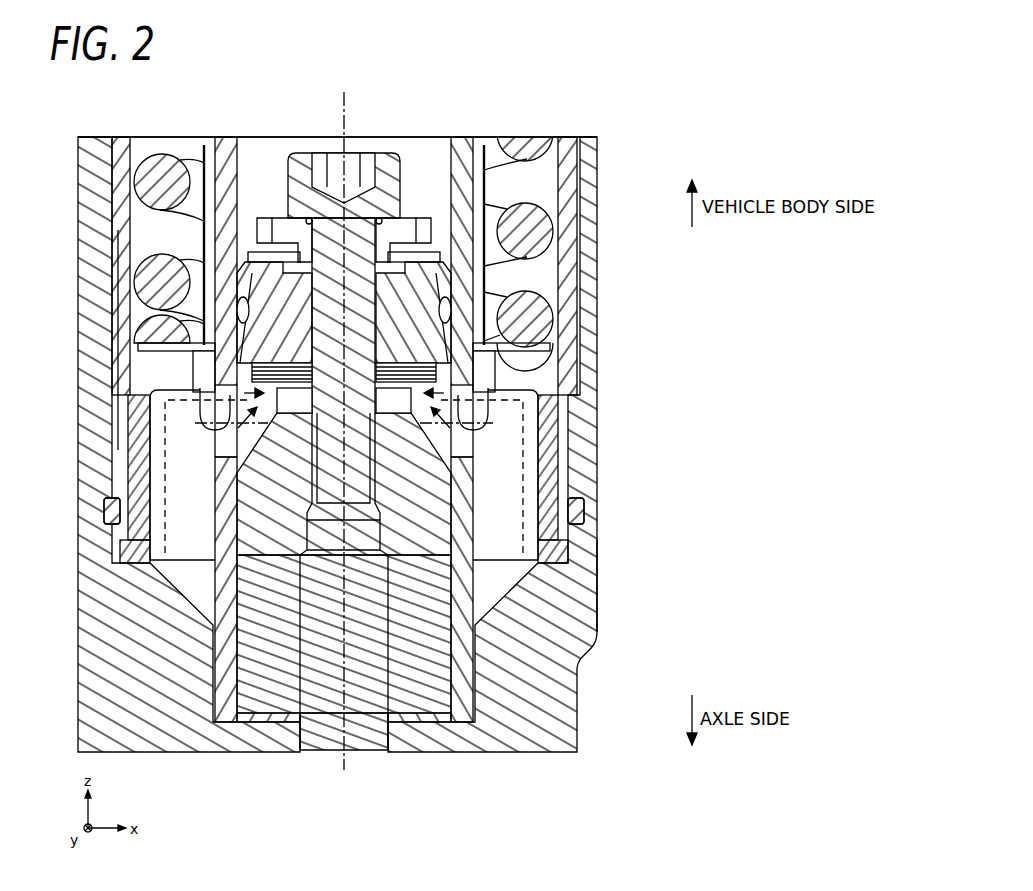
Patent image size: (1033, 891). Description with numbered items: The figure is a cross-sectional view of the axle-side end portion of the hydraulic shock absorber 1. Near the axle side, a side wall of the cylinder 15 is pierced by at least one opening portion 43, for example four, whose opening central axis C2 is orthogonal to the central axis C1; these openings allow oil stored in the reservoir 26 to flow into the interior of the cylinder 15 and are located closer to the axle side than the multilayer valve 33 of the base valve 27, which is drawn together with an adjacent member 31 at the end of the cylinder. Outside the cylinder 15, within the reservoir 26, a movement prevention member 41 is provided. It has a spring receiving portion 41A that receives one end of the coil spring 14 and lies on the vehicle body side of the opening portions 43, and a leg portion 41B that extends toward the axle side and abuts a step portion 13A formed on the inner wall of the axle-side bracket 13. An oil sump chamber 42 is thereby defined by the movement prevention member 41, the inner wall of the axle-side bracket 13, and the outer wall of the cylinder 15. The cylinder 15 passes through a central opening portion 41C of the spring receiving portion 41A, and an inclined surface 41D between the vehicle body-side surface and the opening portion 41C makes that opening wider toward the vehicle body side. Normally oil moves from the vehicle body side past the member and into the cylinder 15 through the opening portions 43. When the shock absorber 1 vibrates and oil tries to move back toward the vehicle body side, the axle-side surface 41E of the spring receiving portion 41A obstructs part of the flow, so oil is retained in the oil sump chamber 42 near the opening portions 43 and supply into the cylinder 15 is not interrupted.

The hydraulic shock absorber 1 is at (687, 108).
The axle-side bracket 13 is at (586, 603).
The step portion 13A is at (580, 577).
The coil spring 14 is at (530, 234).
The cylinder 15 is at (478, 277).
The reservoir 26 is at (530, 185).
The base valve 27 is at (450, 303).
The retainer 31 is at (262, 255).
The multilayer valve 33 is at (252, 372).
The movement prevention member 41 is at (140, 467).
The spring receiving portion 41A is at (493, 352).
The leg portion 41B is at (584, 522).
The opening portion 41C is at (490, 381).
The inclined surface 41D is at (540, 333).
The axle-side surface 41E is at (165, 399).
The oil sump chamber 42 is at (178, 496).
The opening portion 43 is at (214, 441).
The central axis C1 is at (346, 118).
The opening central axis C2 is at (490, 423).